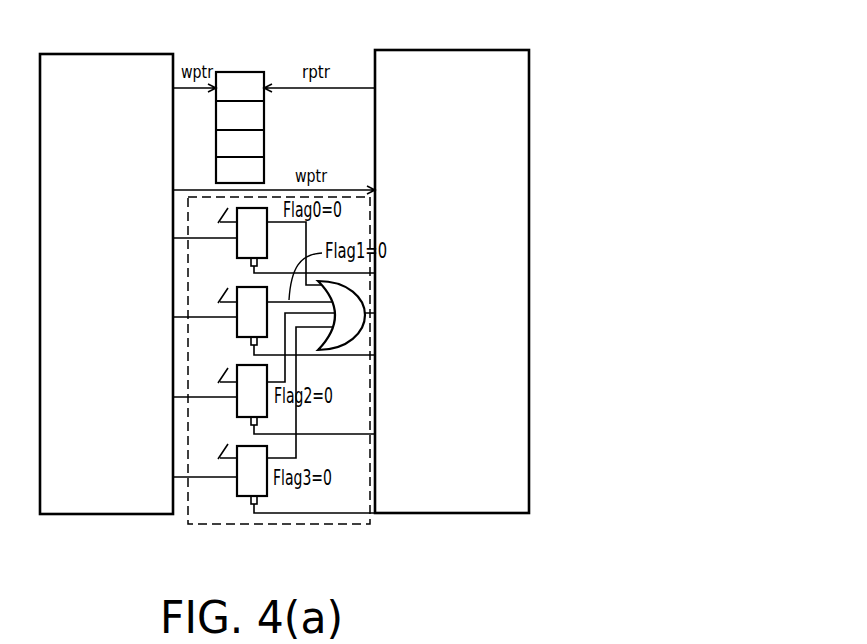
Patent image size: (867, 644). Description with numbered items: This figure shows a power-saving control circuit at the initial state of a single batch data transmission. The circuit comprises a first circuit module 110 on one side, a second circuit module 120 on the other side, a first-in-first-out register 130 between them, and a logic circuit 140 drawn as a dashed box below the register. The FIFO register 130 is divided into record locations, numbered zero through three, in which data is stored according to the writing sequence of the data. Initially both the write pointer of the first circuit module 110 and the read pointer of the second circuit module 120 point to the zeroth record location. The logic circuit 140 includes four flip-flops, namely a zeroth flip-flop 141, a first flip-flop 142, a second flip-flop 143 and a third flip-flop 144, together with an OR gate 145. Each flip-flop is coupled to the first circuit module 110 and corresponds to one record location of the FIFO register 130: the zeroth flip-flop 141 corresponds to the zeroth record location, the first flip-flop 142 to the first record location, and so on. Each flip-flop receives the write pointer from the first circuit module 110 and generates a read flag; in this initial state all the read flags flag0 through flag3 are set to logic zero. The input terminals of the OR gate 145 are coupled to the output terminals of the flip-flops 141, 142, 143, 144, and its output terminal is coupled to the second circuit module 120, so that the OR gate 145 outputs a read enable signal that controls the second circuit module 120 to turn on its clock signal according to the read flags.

The first circuit module 110 is at (108, 53).
The second circuit module 120 is at (452, 50).
The first-in-first-out (FIFO) register 130 is at (241, 72).
The logic circuit 140 is at (213, 524).
The zeroth flip-flop 141 is at (237, 247).
The first flip-flop 142 is at (236, 328).
The second flip-flop 143 is at (236, 406).
The third flip-flop 144 is at (236, 485).
The OR gate 145 is at (321, 340).